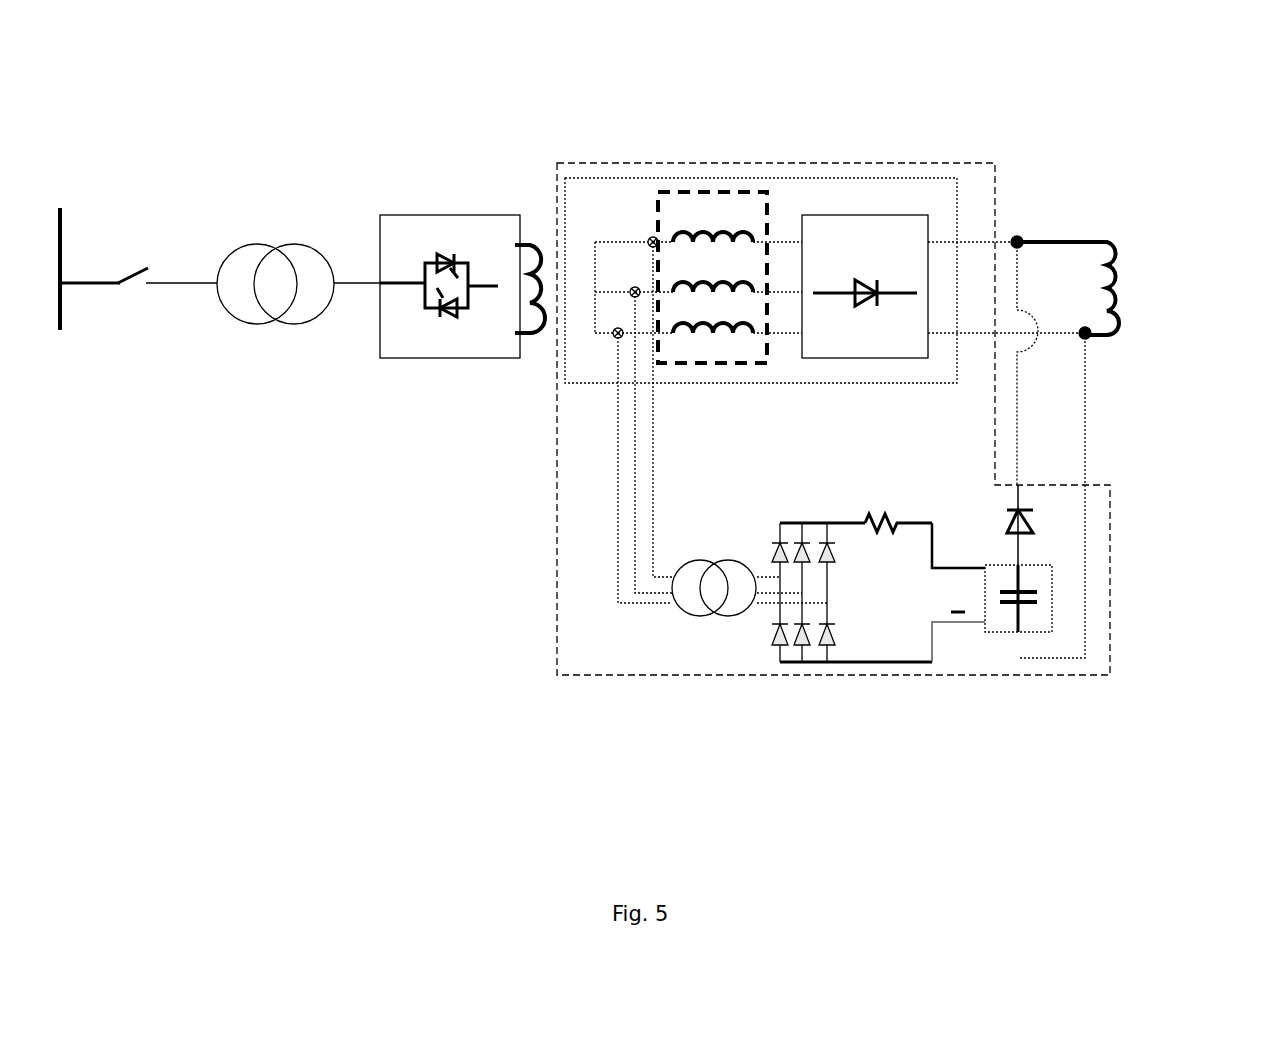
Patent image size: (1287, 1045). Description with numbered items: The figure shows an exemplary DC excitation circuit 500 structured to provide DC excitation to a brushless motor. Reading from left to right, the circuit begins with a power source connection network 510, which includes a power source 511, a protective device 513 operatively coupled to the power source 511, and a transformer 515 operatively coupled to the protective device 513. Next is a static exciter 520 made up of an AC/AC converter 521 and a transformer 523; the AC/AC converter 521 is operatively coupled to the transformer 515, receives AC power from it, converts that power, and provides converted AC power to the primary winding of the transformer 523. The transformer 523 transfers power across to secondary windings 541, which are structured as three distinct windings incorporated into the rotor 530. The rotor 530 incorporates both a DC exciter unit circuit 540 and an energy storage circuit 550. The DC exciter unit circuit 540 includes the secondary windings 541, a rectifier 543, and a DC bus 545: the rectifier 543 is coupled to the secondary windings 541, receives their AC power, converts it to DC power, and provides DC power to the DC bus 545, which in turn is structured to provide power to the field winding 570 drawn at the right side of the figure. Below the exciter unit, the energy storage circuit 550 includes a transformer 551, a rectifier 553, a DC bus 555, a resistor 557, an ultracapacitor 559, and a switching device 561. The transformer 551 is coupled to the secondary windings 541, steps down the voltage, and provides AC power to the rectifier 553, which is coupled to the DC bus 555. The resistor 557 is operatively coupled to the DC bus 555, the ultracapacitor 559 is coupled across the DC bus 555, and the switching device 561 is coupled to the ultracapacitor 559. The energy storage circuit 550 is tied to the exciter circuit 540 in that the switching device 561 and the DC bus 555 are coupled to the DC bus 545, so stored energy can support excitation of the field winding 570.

The DC excitation circuit 500 is at (1145, 718).
The power source connection network 510 is at (210, 362).
The power source 511 is at (62, 299).
The protective device 513 is at (128, 270).
The transformer 515 is at (276, 250).
The static exciter 520 is at (441, 375).
The AC/AC converter 521 is at (443, 215).
The transformer 523 is at (522, 245).
The rotor 530 is at (633, 162).
The DC exciter unit circuit 540 is at (872, 178).
The secondary windings 541 is at (723, 363).
The rectifier 543 is at (905, 215).
The DC bus 545 is at (940, 242).
The energy storage circuit 550 is at (667, 645).
The transformer 551 is at (715, 563).
The rectifier 553 is at (801, 518).
The DC bus 555 is at (841, 523).
The resistor 557 is at (881, 523).
The ultracapacitor 559 is at (1000, 565).
The switching device 561 is at (1027, 522).
The field winding 570 is at (1108, 242).